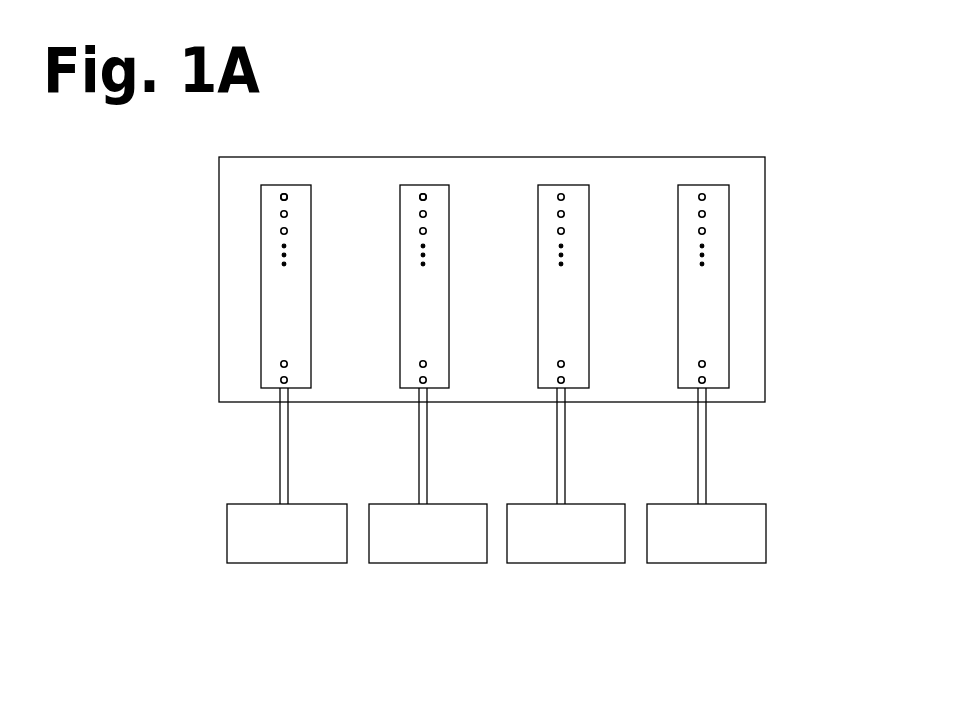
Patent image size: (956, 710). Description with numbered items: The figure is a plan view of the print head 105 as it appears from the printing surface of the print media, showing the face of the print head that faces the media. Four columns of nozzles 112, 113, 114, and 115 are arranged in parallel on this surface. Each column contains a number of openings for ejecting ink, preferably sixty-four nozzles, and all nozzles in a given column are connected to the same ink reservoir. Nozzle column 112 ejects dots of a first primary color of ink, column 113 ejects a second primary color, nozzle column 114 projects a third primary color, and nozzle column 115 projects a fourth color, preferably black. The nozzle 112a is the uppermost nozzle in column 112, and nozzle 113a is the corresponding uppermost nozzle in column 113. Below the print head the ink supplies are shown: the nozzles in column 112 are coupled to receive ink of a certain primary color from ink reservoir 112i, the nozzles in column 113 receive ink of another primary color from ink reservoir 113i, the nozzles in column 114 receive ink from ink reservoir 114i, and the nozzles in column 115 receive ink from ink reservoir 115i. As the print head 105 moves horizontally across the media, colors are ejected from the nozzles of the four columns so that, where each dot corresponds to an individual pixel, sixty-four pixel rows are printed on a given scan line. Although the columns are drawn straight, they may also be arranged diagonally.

The print head 105 is at (521, 78).
The nozzle column 112 is at (286, 163).
The nozzle column 113 is at (425, 163).
The nozzle column 114 is at (564, 163).
The nozzle column 115 is at (705, 163).
The nozzle 112a is at (281, 197).
The nozzle 113a is at (427, 197).
The ink reservoir 112i is at (257, 573).
The ink reservoir 113i is at (399, 573).
The ink reservoir 114i is at (537, 573).
The ink reservoir 115i is at (693, 573).